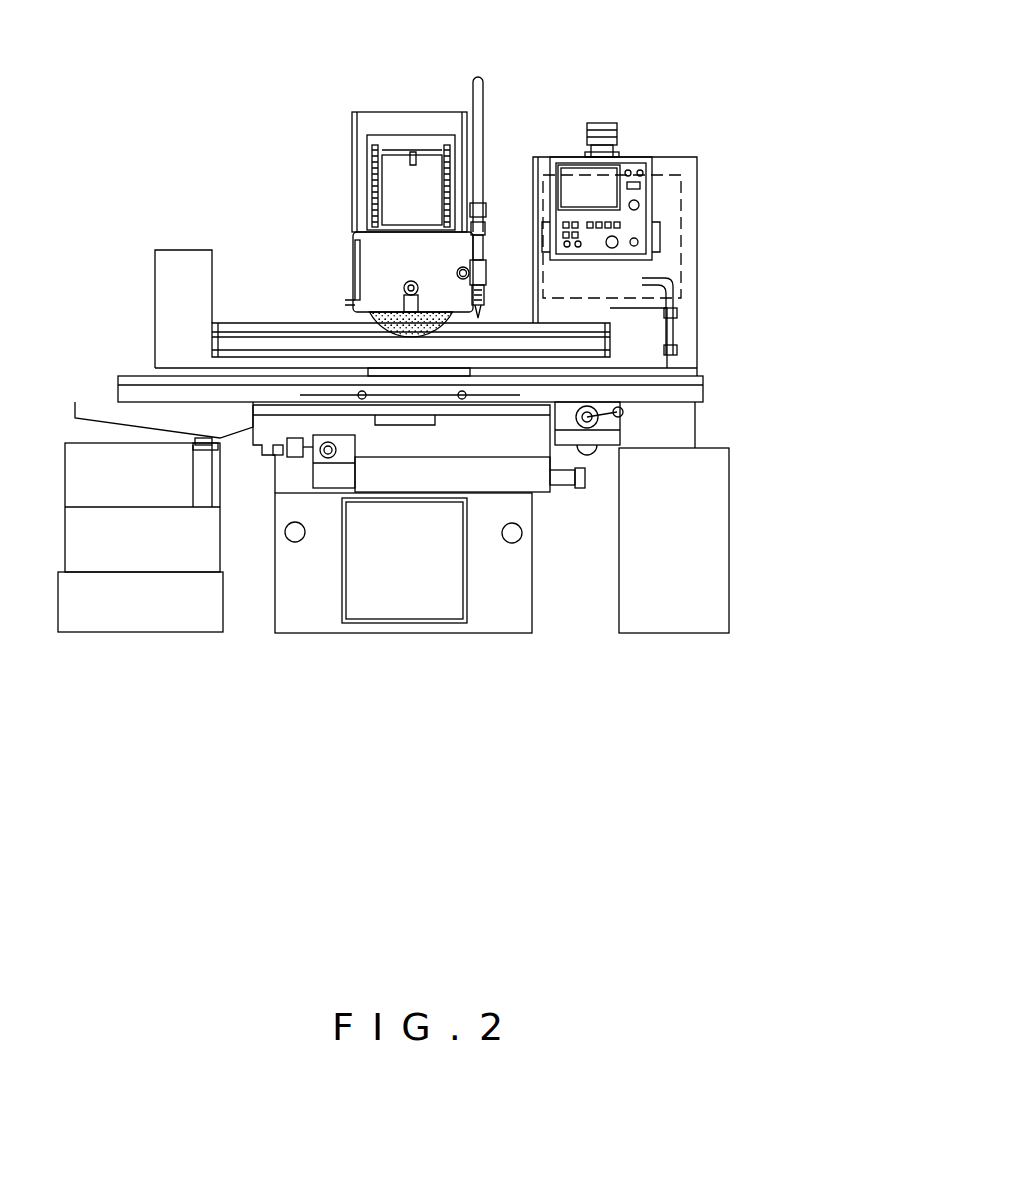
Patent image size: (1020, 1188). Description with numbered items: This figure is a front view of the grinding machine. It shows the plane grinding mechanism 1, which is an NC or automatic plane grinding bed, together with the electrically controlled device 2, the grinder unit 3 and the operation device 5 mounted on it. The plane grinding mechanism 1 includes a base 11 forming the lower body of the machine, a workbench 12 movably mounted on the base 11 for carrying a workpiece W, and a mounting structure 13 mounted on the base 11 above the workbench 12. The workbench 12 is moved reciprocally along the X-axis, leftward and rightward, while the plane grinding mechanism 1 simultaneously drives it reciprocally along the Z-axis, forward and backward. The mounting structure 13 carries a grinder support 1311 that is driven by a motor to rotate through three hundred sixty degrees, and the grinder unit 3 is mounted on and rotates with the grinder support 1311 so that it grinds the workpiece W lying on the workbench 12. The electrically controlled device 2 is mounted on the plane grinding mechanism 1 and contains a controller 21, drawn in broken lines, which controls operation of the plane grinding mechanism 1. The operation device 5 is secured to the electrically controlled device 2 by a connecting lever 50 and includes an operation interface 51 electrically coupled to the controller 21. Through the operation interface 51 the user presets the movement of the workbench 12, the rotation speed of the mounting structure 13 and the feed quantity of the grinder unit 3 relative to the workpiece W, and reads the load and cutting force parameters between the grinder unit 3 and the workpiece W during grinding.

The plane grinding mechanism 1 is at (143, 270).
The base 11 is at (390, 615).
The workbench 12 is at (207, 392).
The mounting structure 13 is at (334, 235).
The grinder support 1311 is at (405, 298).
The grinder unit 3 is at (375, 328).
The electrically controlled device 2 is at (703, 203).
The controller 21 is at (690, 275).
The operation device 5 is at (666, 192).
The connecting lever 50 is at (603, 130).
The operation interface 51 is at (642, 210).
The workpiece W is at (480, 370).